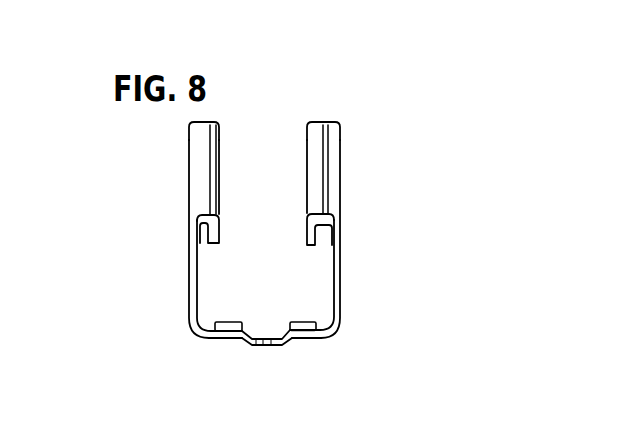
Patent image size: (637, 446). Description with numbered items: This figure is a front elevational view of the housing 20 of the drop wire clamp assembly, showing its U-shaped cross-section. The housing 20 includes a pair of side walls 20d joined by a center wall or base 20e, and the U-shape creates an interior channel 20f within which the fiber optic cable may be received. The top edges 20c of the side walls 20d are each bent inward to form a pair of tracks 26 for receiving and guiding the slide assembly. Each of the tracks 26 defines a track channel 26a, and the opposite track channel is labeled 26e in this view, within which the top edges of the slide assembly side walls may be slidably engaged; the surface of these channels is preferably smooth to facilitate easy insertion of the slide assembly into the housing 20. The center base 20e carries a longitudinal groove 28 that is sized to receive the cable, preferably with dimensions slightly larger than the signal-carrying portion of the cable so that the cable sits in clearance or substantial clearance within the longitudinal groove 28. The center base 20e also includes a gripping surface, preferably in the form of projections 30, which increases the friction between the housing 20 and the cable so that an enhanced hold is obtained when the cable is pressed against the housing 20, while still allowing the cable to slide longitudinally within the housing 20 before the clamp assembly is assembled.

The housing 20 is at (381, 186).
The top edges 20c is at (192, 123).
The side walls 20d is at (188, 275).
The center base 20e is at (262, 344).
The interior channel 20f is at (269, 174).
The tracks 26 is at (197, 147).
The track channel 26a is at (204, 236).
The hook of right flange 26e is at (324, 234).
The longitudinal groove 28 is at (278, 344).
The projections 30 is at (226, 331).